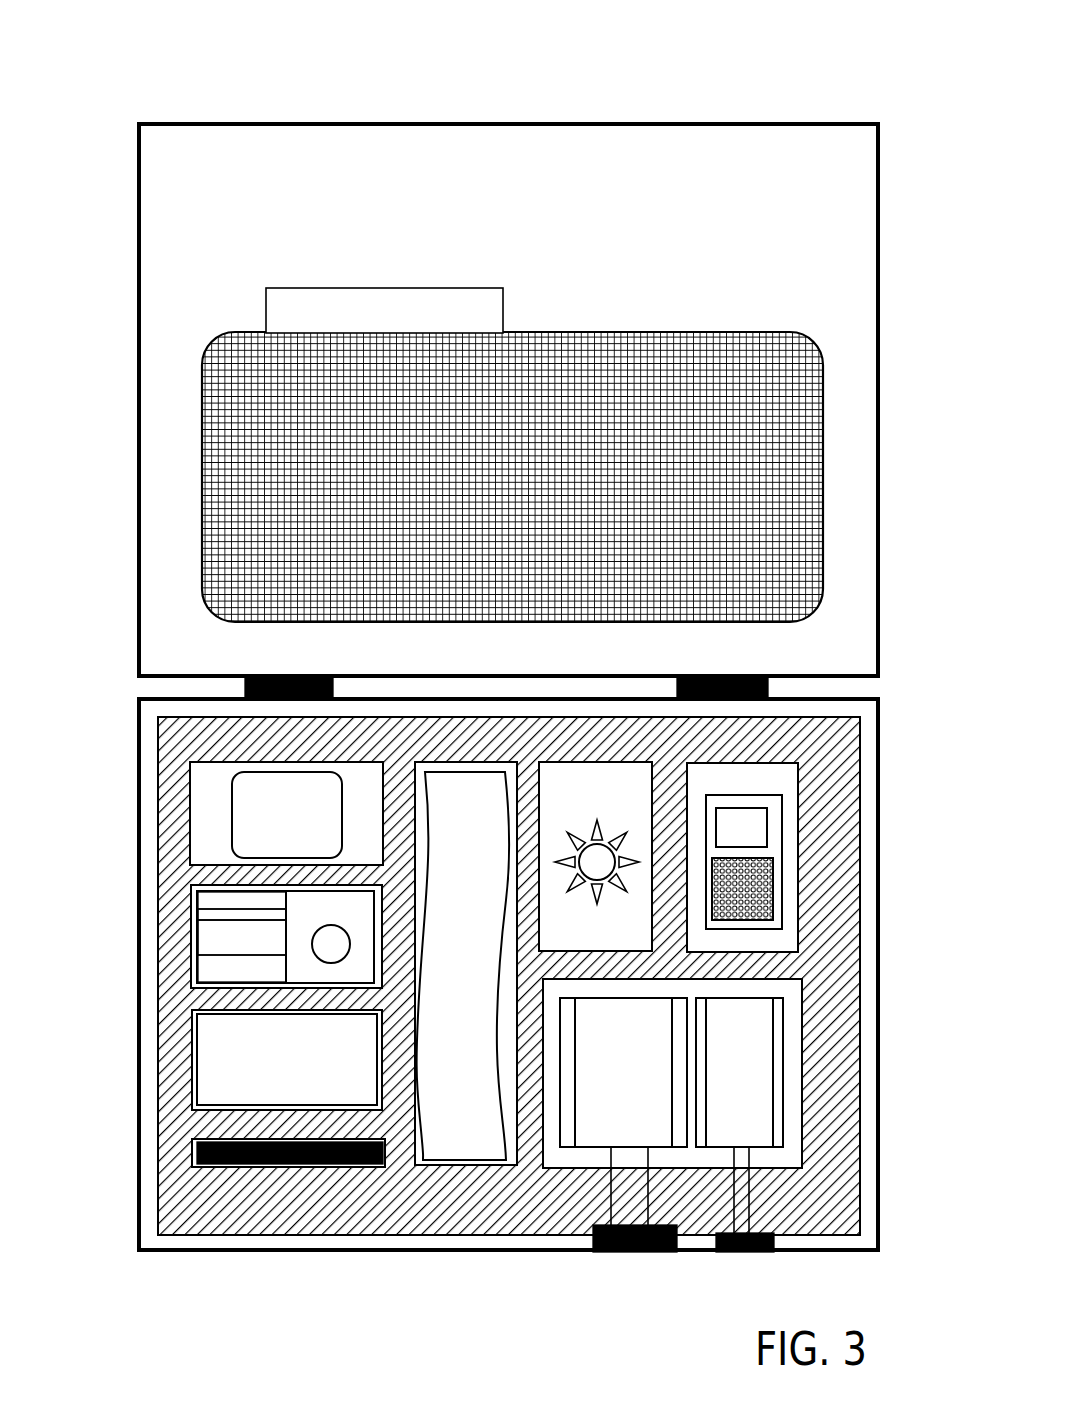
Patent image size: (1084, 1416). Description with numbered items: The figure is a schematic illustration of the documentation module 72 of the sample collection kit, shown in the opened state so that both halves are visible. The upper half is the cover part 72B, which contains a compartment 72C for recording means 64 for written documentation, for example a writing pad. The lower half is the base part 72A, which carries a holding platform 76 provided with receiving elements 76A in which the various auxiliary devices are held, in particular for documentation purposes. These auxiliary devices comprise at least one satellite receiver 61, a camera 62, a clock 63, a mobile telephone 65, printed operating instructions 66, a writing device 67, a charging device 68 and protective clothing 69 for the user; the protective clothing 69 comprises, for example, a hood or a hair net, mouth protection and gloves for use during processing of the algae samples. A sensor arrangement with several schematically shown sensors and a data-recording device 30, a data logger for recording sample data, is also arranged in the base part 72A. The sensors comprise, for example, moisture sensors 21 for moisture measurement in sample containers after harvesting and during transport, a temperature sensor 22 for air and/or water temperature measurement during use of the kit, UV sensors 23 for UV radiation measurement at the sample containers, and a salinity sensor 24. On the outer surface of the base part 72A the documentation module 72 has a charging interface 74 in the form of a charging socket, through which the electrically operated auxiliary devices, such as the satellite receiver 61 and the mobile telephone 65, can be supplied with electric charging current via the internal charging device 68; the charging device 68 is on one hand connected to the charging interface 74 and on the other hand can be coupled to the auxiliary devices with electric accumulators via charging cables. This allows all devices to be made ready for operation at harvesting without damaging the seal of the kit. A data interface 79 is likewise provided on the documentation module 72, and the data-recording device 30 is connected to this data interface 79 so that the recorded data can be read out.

The documentation module 72 is at (785, 89).
The base part 72A is at (200, 1253).
The cover part 72B is at (206, 122).
The compartment 72C is at (284, 355).
The recording means 64 is at (382, 288).
The holding platform 76 is at (337, 1219).
The receiving elements 76A is at (387, 1148).
The protective clothing 69 is at (455, 783).
The clock 63 is at (310, 812).
The camera 62 is at (309, 903).
The salinity sensor 24 is at (233, 897).
The UV sensors 23 is at (233, 913).
The temperature sensor 22 is at (233, 944).
The moisture sensors 21 is at (233, 975).
The printed operating instructions 66 is at (305, 1027).
The writing device 67 is at (196, 1145).
The satellite receiver 61 is at (635, 915).
The mobile telephone 65 is at (754, 852).
The charging device 68 is at (633, 1127).
The data-recording device 30 is at (753, 1063).
The charging interface 74 is at (615, 1253).
The data interface 79 is at (733, 1253).